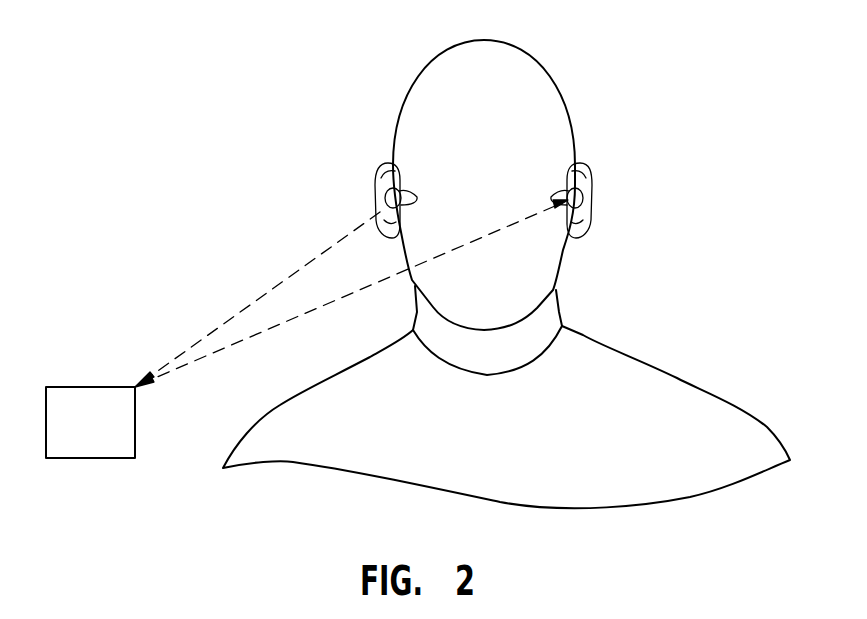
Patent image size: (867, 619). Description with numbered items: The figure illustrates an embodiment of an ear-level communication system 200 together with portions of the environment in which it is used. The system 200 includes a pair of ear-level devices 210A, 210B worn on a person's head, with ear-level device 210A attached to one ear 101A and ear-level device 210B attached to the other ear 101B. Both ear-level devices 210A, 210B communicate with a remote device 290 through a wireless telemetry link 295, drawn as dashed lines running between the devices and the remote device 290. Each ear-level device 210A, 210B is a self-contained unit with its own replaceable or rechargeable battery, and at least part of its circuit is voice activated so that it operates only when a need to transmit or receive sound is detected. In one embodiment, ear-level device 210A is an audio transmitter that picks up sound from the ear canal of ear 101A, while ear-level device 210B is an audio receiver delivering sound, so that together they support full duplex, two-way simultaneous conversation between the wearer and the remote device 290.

The ear-level communication system 200 is at (190, 118).
The ear 101A is at (362, 184).
The ear 101B is at (609, 200).
The ear-level device 210A is at (384, 199).
The ear-level device 210B is at (586, 204).
The remote device 290 is at (91, 387).
The wireless telemetry link 295 is at (255, 335).